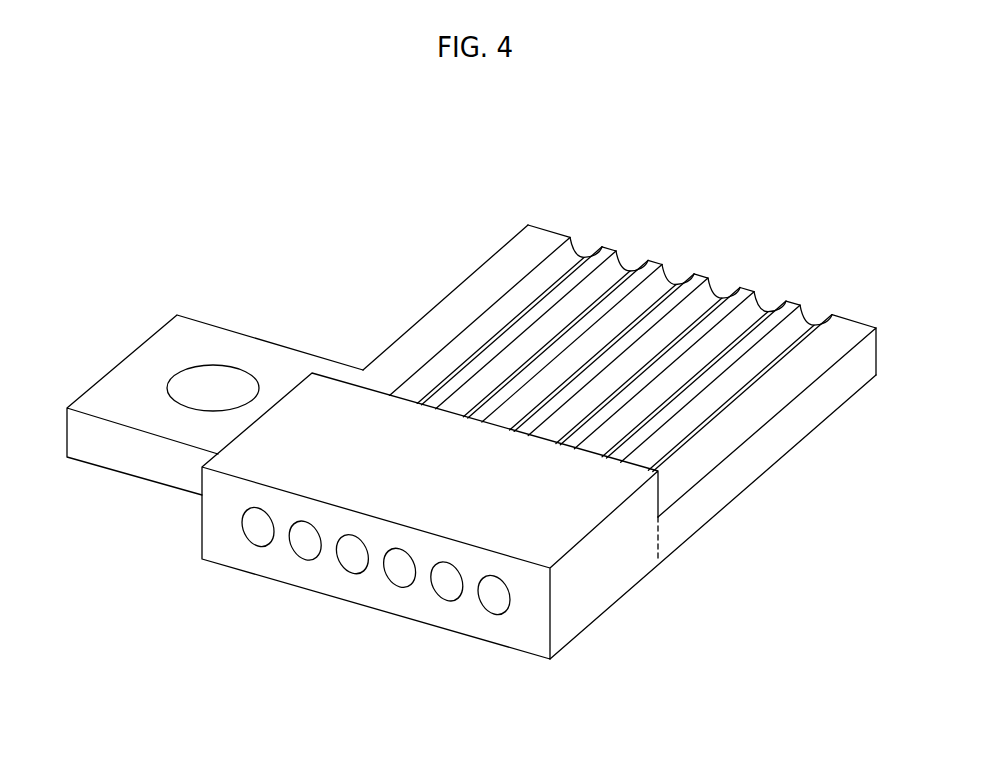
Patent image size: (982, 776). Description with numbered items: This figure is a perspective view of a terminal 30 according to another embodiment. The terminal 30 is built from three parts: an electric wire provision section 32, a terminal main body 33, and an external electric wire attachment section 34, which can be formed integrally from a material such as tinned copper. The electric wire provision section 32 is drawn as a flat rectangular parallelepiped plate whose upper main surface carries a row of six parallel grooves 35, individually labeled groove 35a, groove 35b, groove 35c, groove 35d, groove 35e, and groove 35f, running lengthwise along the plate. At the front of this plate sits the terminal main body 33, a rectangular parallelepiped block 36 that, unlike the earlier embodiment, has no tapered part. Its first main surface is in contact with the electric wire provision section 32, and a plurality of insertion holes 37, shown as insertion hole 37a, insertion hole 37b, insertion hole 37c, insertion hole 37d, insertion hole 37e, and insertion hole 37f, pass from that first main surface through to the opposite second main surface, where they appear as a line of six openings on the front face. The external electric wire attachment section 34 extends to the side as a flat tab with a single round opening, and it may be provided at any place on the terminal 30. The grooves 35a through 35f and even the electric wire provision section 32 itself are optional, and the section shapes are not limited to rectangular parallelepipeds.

The terminal 30 is at (378, 177).
The electric wire provision section 32 is at (887, 381).
The terminal main body 33 is at (664, 575).
The external electric wire attachment section 34 is at (133, 380).
The grooves 35 is at (853, 214).
The groove 35a is at (581, 254).
The groove 35b is at (628, 268).
The groove 35c is at (674, 281).
The groove 35d is at (721, 295).
The groove 35e is at (767, 309).
The groove 35f is at (814, 323).
The block 36 is at (538, 647).
The insertion holes 37 is at (454, 704).
The insertion hole 37a is at (255, 530).
The insertion hole 37b is at (303, 543).
The insertion hole 37c is at (351, 557).
The insertion hole 37d is at (398, 570).
The insertion hole 37e is at (445, 584).
The insertion hole 37f is at (492, 597).